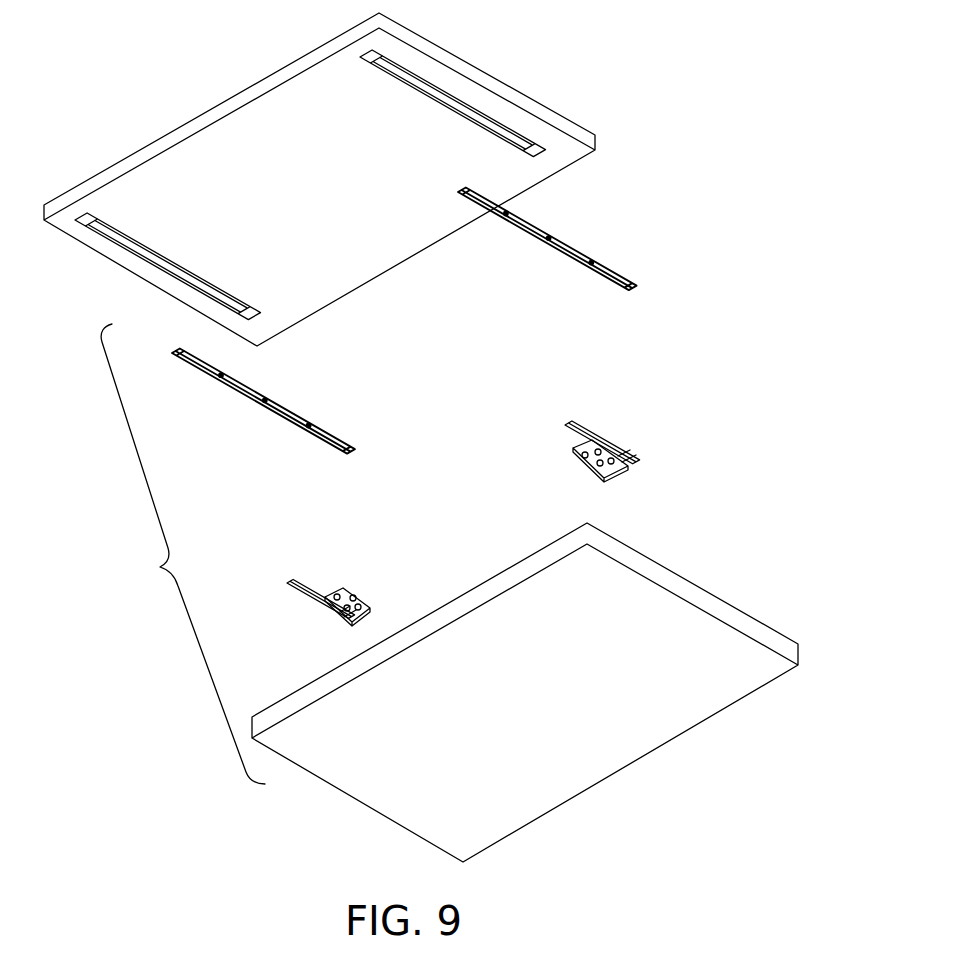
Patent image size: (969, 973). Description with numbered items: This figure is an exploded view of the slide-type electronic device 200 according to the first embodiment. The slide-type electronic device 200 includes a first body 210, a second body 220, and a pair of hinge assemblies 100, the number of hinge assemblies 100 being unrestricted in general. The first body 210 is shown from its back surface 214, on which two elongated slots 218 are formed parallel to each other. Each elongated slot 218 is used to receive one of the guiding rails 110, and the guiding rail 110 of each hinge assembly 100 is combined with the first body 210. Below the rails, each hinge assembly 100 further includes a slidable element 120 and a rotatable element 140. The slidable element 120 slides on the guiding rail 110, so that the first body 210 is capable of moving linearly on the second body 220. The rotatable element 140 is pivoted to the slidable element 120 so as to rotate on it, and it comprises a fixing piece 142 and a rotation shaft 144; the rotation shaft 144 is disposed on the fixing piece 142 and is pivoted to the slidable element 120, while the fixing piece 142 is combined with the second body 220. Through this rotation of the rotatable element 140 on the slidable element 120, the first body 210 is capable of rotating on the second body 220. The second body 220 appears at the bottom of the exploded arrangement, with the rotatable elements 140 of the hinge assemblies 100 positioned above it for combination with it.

The hinge assembly 100 is at (658, 265).
The guiding rail 110 is at (277, 417).
The slidable element 120 is at (302, 590).
The rotatable element 140 is at (472, 541).
The fixing piece 142 is at (357, 592).
The rotation shaft 144 is at (373, 618).
The slide-type electronic device 200 is at (183, 554).
The first body 210 is at (517, 98).
The back surface 214 is at (343, 273).
The elongated slot 218 is at (513, 130).
The second body 220 is at (737, 620).